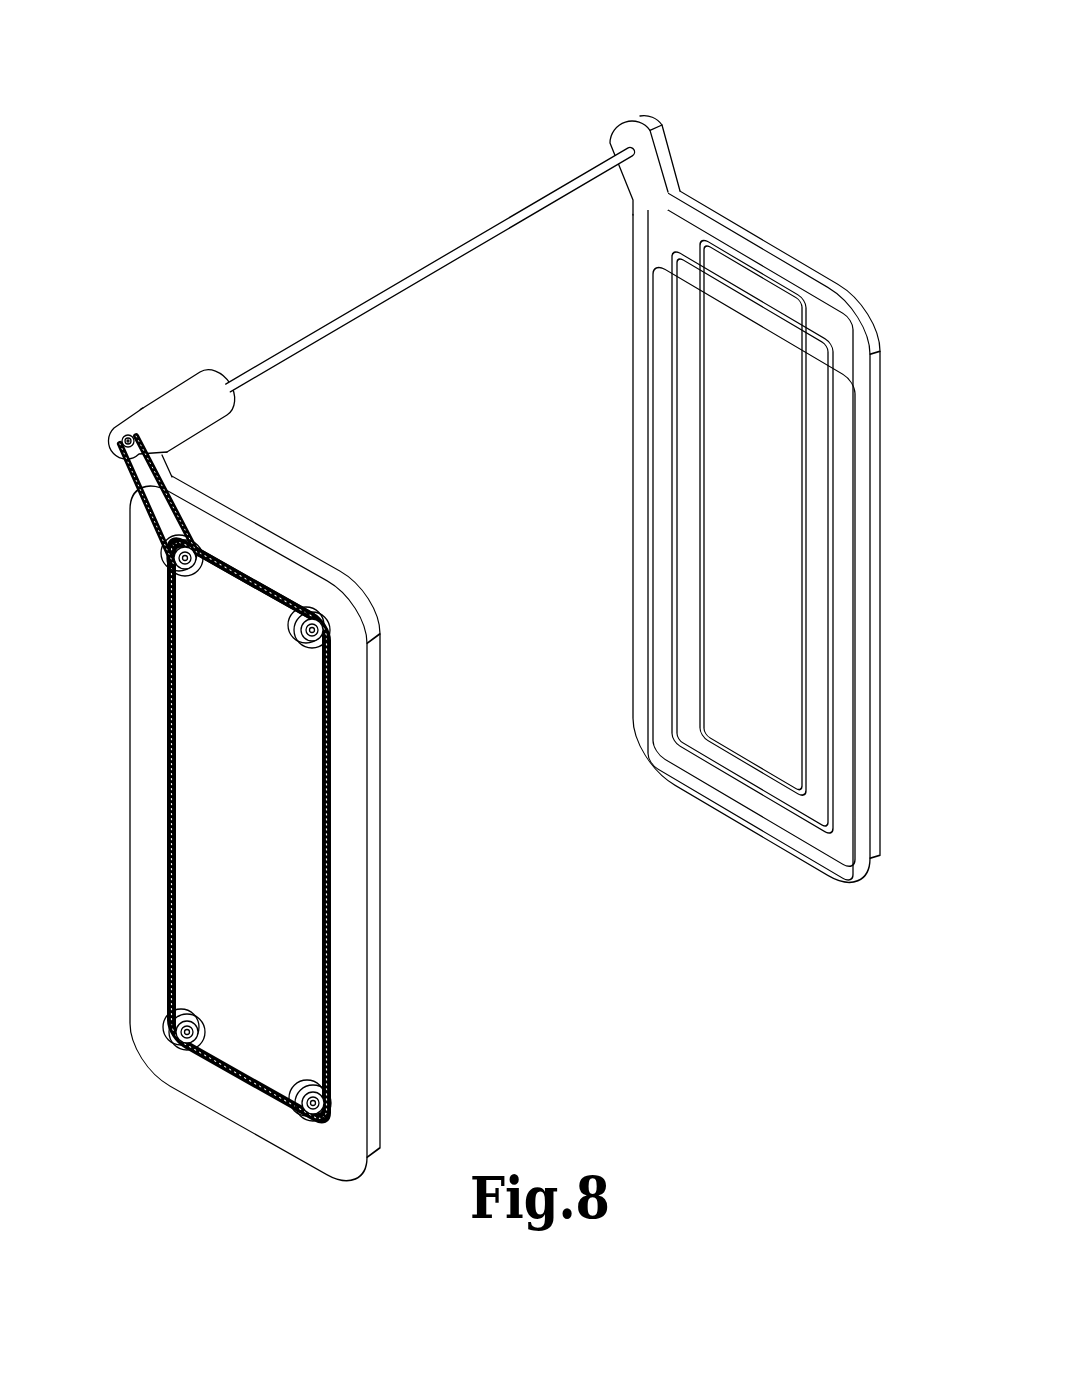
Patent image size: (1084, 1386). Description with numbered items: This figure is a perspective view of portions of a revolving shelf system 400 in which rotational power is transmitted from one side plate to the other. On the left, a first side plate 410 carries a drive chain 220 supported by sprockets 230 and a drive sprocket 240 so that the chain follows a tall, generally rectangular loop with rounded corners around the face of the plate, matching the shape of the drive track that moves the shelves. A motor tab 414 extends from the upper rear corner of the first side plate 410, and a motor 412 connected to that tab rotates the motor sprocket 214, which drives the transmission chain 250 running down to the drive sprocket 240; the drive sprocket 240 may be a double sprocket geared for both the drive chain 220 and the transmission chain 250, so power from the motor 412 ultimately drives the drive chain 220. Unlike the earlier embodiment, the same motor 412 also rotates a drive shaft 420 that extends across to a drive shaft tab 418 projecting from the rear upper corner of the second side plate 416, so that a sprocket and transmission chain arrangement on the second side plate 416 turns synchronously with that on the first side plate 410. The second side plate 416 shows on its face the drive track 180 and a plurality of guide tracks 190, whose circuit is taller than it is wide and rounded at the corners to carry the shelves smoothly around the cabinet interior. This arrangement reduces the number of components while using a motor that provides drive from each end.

The revolving shelf system 400 is at (285, 239).
The first side plate 410 is at (350, 1032).
The motor 412 is at (190, 403).
The motor tab 414 is at (162, 452).
The second side plate 416 is at (700, 200).
The drive shaft tab 418 is at (664, 122).
The drive shaft 420 is at (411, 281).
The motor sprocket 214 is at (120, 434).
The drive chain 220 is at (167, 817).
The sprockets 230 is at (238, 836).
The drive sprocket 240 is at (213, 553).
The transmission chain 250 is at (150, 520).
The drive track 180 is at (830, 387).
The guide tracks 190 is at (832, 300).